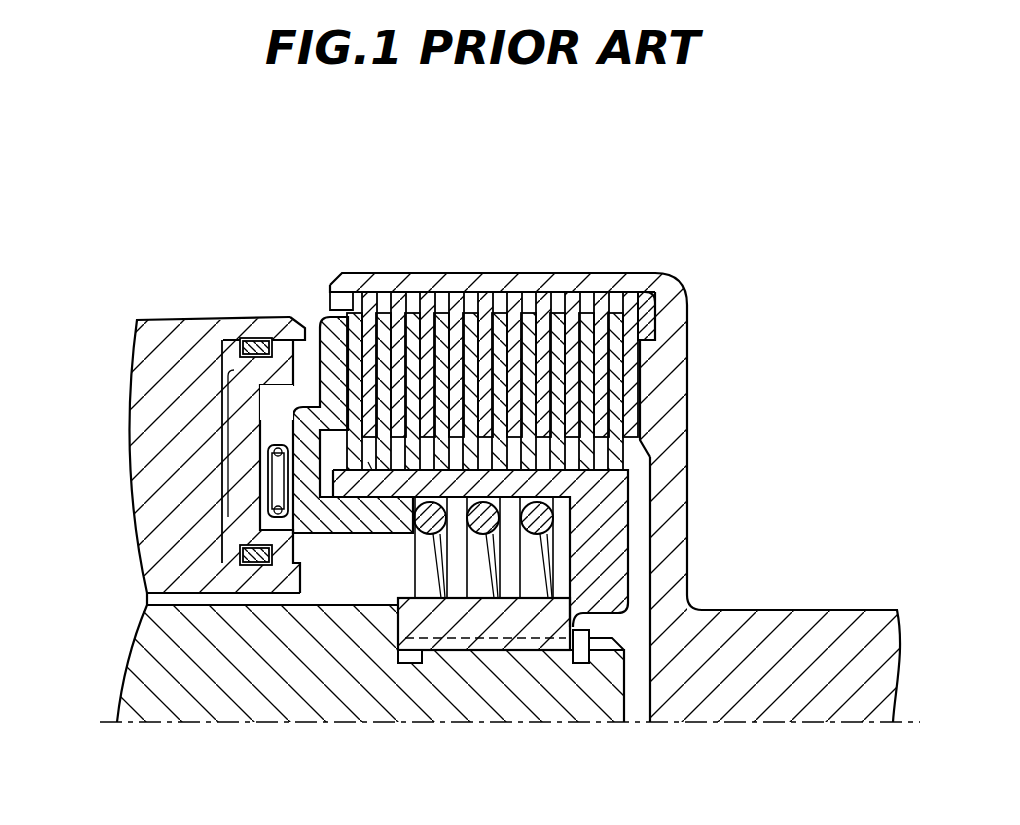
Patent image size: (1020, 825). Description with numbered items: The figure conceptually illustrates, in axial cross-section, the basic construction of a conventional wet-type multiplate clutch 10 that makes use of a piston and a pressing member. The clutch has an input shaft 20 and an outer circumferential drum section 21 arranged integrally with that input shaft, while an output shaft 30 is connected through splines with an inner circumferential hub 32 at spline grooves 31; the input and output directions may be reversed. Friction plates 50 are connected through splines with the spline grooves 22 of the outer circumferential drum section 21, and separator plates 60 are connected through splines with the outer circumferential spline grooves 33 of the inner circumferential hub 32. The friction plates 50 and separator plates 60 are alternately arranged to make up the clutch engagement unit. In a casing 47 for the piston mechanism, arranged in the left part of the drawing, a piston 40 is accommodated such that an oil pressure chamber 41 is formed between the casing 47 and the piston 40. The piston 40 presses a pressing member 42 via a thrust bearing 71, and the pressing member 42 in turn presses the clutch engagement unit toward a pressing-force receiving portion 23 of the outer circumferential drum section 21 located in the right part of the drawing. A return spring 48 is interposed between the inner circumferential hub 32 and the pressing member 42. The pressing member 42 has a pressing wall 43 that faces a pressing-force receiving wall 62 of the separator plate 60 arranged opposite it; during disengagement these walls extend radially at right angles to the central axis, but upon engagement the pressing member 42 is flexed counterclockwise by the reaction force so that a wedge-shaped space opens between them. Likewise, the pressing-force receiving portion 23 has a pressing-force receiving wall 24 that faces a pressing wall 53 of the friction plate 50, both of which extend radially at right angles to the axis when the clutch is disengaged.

The wet-type multiplate clutch 10 is at (745, 226).
The input shaft 20 is at (800, 630).
The outer circumferential drum section 21 is at (558, 283).
The spline grooves 22 is at (472, 300).
The pressing-force receiving portion 23 is at (663, 350).
The pressing-force receiving wall 24 is at (640, 397).
The output shaft 30 is at (223, 697).
The spline grooves 31 is at (458, 600).
The inner circumferential hub 32 is at (607, 538).
The outer circumferential spline grooves 33 is at (368, 462).
The piston 40 is at (222, 397).
The oil pressure chamber 41 is at (222, 503).
The pressing member 42 is at (320, 320).
The pressing wall 43 is at (248, 397).
The casing 47 is at (167, 353).
The return spring 48 is at (540, 600).
The friction plates 50 is at (630, 300).
The pressing wall 53 is at (630, 423).
The separator plates 60 is at (358, 330).
The pressing-force receiving wall 62 is at (350, 428).
The thrust bearing 71 is at (248, 517).